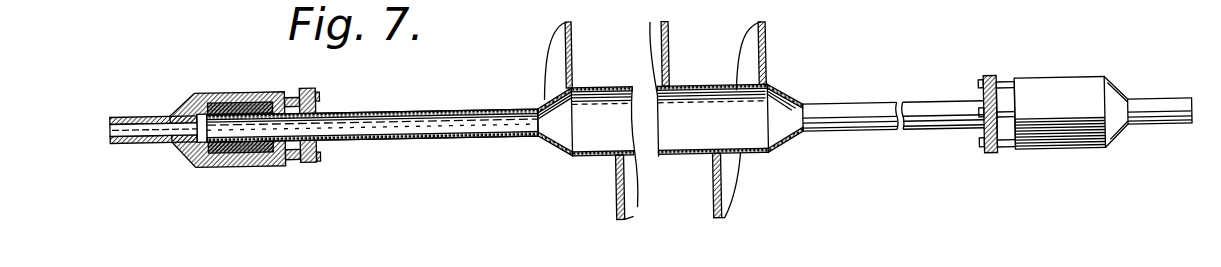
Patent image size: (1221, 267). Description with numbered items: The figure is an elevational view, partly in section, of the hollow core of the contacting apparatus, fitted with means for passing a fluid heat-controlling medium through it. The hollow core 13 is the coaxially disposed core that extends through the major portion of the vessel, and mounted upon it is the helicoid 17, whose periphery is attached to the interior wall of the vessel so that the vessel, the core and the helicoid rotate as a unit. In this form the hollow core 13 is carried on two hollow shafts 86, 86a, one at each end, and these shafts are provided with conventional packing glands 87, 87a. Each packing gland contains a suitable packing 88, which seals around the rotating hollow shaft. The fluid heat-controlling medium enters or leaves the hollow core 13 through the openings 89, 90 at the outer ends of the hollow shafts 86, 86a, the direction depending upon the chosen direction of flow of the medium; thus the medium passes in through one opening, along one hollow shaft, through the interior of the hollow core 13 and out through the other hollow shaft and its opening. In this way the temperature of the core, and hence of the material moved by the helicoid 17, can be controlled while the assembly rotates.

The hollow core 13 is at (622, 96).
The helicoid 17 is at (637, 217).
The hollow shaft 86 is at (392, 117).
The hollow shaft 86a is at (857, 118).
The packing gland 87 is at (227, 96).
The packing gland 87a is at (1052, 106).
The packing 88 is at (243, 152).
The opening 89 is at (109, 130).
The opening 90 is at (1190, 132).